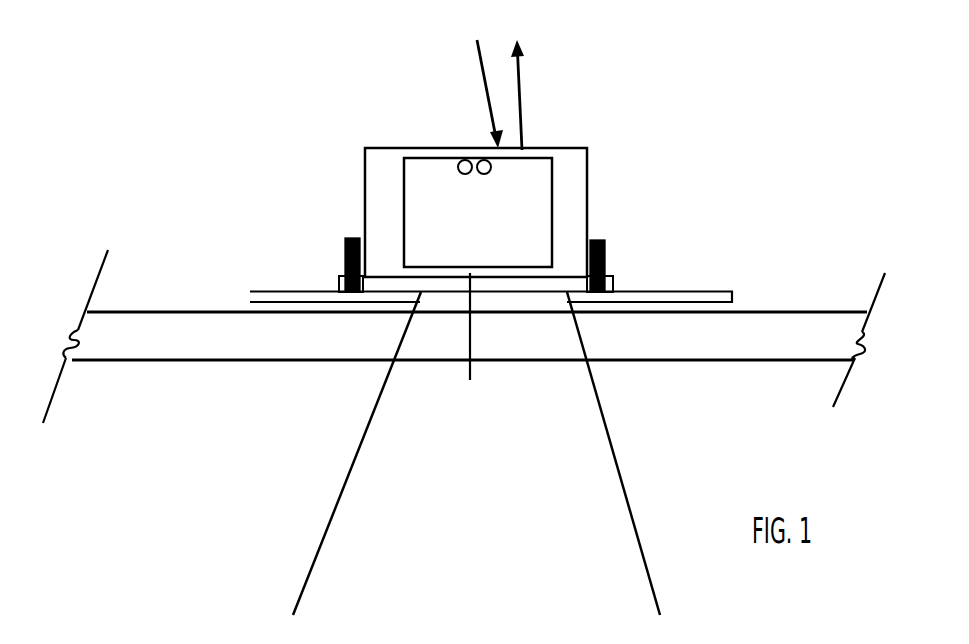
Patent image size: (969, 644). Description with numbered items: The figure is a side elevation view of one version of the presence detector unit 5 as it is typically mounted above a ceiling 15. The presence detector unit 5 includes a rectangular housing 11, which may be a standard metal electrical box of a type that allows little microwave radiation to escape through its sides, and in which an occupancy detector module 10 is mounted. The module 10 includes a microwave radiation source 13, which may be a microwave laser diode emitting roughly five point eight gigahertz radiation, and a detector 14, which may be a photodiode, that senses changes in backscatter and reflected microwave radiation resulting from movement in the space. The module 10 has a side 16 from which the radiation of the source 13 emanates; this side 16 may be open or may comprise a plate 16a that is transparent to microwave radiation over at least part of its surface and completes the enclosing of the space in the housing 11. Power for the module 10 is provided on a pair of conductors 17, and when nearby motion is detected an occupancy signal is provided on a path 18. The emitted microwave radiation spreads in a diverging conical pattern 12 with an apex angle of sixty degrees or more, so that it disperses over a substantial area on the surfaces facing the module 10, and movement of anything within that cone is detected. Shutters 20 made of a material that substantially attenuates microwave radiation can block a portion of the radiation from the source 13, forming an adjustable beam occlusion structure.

The presence detector unit 5 is at (360, 170).
The occupancy detector module 10 is at (517, 252).
The housing 11 is at (563, 148).
The diverging conical pattern 12 is at (363, 435).
The microwave radiation source 13 is at (482, 158).
The detector 14 is at (463, 158).
The ceiling 15 is at (173, 361).
The side 16 is at (592, 243).
The plate 16a is at (464, 352).
The conductors 17 is at (480, 62).
The path 18 is at (520, 72).
The shutters 20 is at (277, 289).